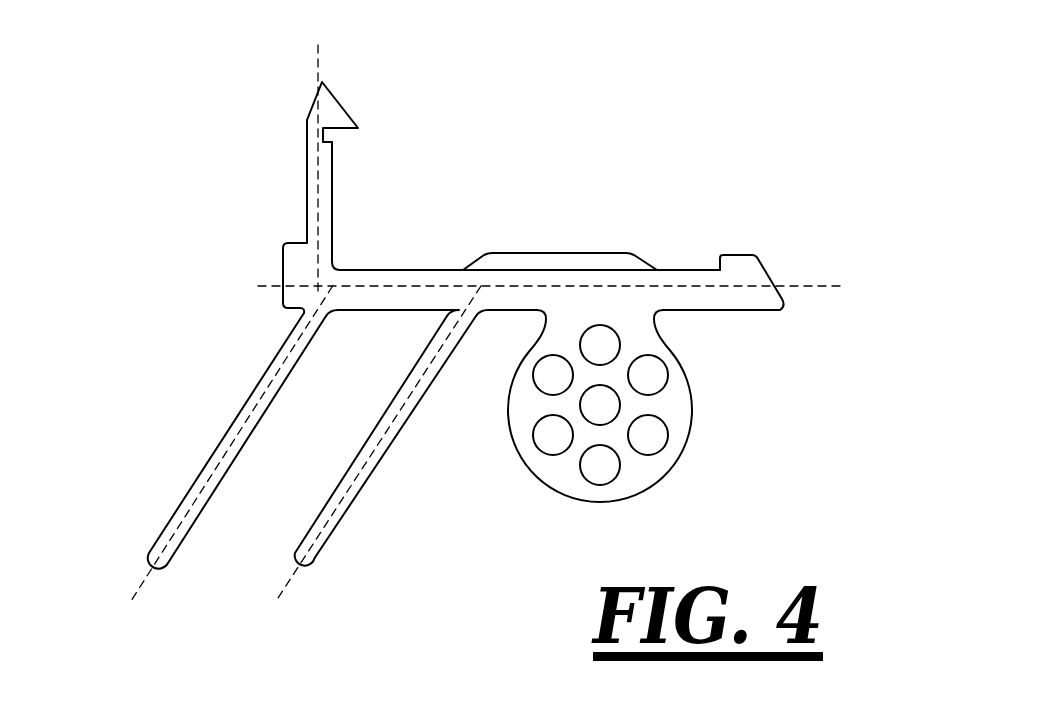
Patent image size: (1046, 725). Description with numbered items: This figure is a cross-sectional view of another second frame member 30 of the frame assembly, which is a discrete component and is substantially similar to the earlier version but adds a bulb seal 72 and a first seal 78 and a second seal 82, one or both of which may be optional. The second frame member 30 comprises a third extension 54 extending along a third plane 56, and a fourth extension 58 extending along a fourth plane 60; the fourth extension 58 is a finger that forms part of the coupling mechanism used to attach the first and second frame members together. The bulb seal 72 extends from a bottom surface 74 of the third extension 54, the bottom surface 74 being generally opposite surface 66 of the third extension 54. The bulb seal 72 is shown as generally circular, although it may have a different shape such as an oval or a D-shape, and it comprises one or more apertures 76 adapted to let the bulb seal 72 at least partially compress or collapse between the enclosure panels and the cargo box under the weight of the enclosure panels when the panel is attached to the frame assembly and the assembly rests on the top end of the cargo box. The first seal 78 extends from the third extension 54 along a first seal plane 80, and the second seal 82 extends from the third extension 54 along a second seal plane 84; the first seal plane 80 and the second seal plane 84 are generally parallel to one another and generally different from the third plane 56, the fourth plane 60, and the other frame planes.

The second frame member 30 is at (146, 168).
The third extension 54 is at (724, 297).
The third plane 56 is at (825, 284).
The fourth extension 58 is at (306, 176).
The fourth plane 60 is at (318, 61).
The surface 66 is at (380, 268).
The bulb seal 72 is at (686, 403).
The bottom surface 74 is at (367, 313).
The apertures 76 is at (600, 340).
The first seal 78 is at (352, 511).
The first seal plane 80 is at (281, 598).
The second seal 82 is at (230, 417).
The second seal plane 84 is at (136, 590).